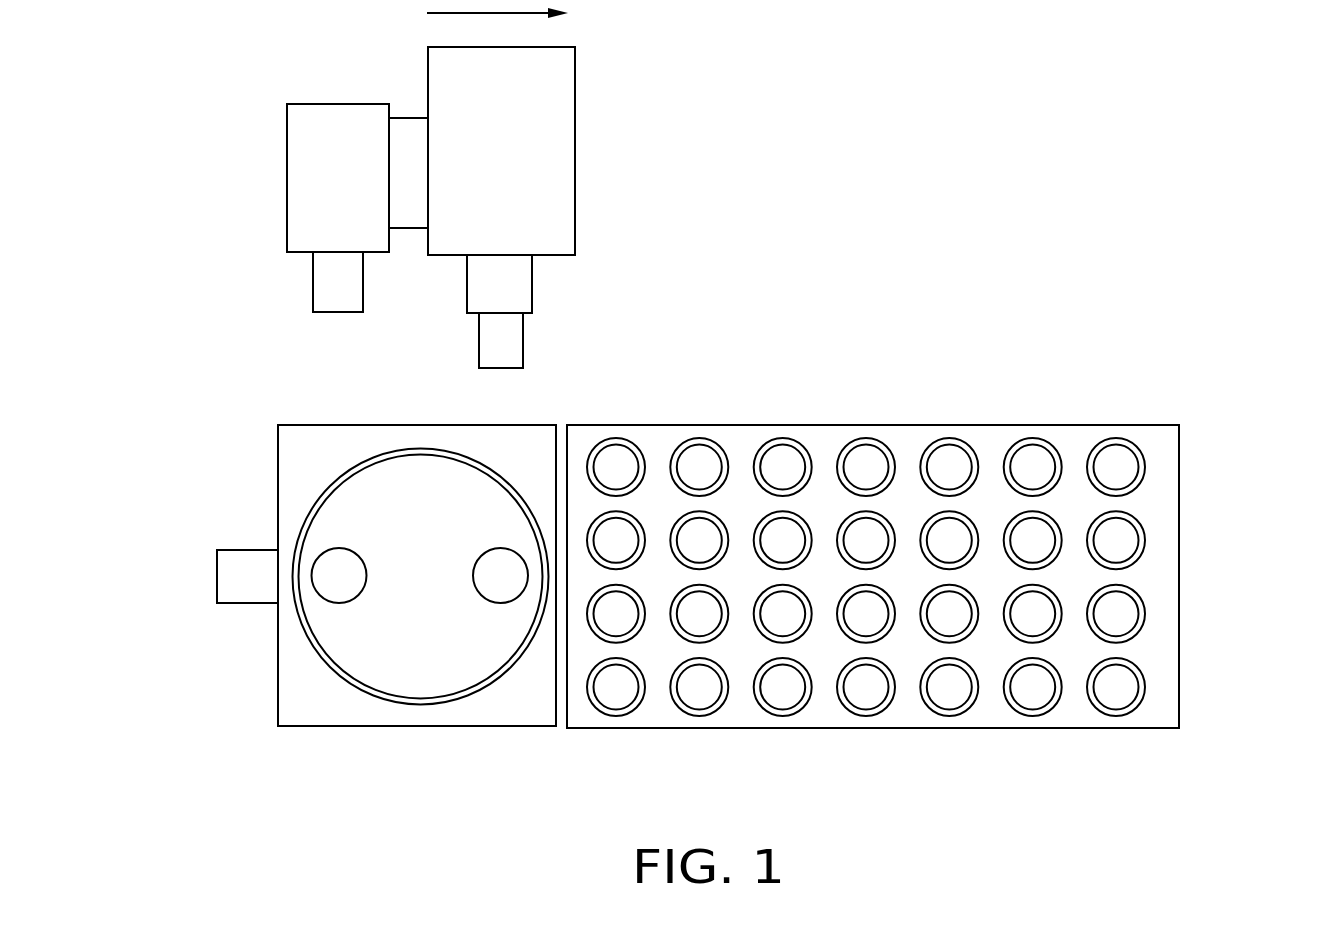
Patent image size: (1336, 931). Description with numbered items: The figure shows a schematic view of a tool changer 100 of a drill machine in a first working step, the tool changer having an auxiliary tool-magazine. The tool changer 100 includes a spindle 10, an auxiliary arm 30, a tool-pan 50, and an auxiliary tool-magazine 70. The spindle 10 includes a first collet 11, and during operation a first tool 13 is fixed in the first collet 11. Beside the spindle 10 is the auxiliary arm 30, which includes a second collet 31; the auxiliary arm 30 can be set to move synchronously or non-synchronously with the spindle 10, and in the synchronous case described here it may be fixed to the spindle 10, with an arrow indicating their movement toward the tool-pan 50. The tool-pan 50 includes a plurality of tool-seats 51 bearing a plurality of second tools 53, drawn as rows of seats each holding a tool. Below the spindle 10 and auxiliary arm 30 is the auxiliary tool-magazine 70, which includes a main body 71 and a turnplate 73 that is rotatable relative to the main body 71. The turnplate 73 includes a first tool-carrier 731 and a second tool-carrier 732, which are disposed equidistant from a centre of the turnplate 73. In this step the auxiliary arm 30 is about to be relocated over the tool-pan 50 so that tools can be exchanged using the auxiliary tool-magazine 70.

The tool changer 100 is at (877, 145).
The spindle 10 is at (523, 185).
The first collet 11 is at (512, 293).
The first tool 13 is at (503, 351).
The auxiliary arm 30 is at (335, 188).
The second collet 31 is at (331, 294).
The tool-pan 50 is at (1158, 510).
The tool-seat 51 is at (888, 448).
The second tool 53 is at (857, 458).
The auxiliary tool-magazine 70 is at (328, 739).
The main body 71 is at (300, 683).
The turnplate 73 is at (379, 495).
The first tool-carrier 731 is at (490, 605).
The second tool-carrier 732 is at (335, 547).